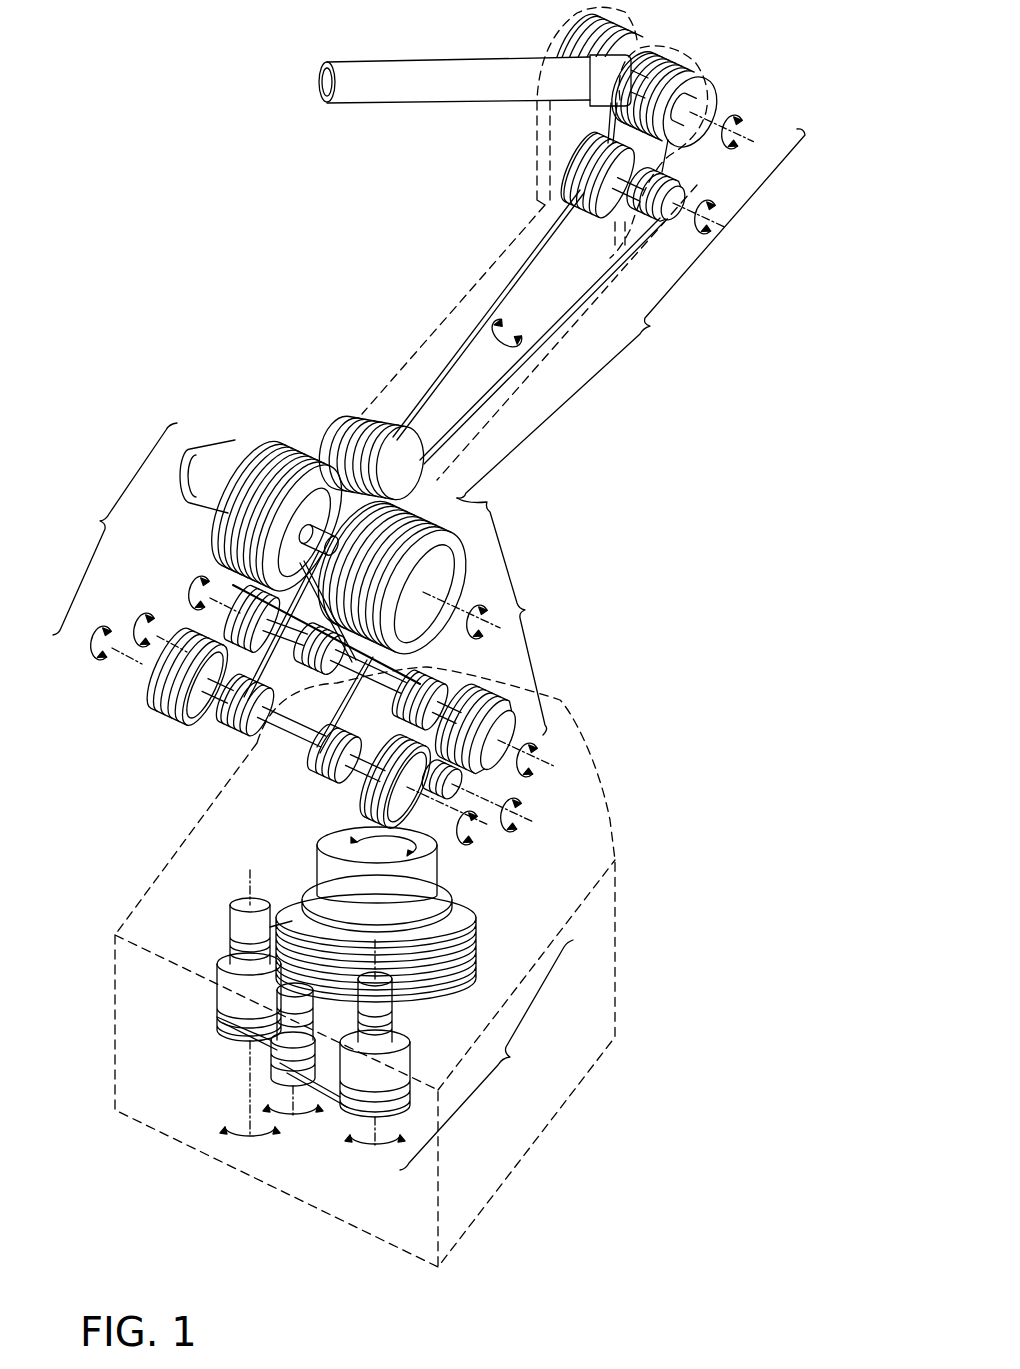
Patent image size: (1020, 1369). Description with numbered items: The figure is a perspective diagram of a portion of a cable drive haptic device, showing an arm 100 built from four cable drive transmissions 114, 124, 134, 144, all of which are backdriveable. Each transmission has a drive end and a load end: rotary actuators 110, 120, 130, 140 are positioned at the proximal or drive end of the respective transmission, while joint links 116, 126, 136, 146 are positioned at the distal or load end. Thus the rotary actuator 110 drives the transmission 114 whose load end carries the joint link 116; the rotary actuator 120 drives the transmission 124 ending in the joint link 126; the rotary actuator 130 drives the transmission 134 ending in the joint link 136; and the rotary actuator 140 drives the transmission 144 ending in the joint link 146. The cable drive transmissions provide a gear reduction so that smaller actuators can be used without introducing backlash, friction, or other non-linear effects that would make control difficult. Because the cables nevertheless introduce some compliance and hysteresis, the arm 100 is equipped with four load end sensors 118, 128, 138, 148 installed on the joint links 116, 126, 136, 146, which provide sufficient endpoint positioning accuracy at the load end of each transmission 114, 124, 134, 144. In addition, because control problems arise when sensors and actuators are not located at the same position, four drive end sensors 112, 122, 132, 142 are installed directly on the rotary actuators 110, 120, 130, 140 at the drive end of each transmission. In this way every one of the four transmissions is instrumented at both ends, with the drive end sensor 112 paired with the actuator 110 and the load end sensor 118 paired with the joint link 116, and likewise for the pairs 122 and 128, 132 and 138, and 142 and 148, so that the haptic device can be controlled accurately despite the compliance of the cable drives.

The arm 100 is at (200, 280).
The rotary actuator 110 is at (270, 1050).
The drive end sensor 112 is at (247, 1042).
The cable drive transmission 114 is at (365, 967).
The joint link 116 is at (477, 927).
The load end sensor 118 is at (450, 905).
The rotary actuator 120 is at (437, 697).
The drive end sensor 122 is at (380, 682).
The cable drive transmission 124 is at (376, 625).
The joint link 126 is at (440, 515).
The load end sensor 128 is at (431, 543).
The rotary actuator 130 is at (268, 732).
The drive end sensor 132 is at (288, 742).
The cable drive transmission 134 is at (115, 529).
The joint link 136 is at (333, 453).
The load end sensor 138 is at (362, 437).
The rotary actuator 140 is at (220, 470).
The drive end sensor 142 is at (190, 460).
The cable drive transmission 144 is at (631, 313).
The joint link 146 is at (675, 53).
The load end sensor 148 is at (710, 97).